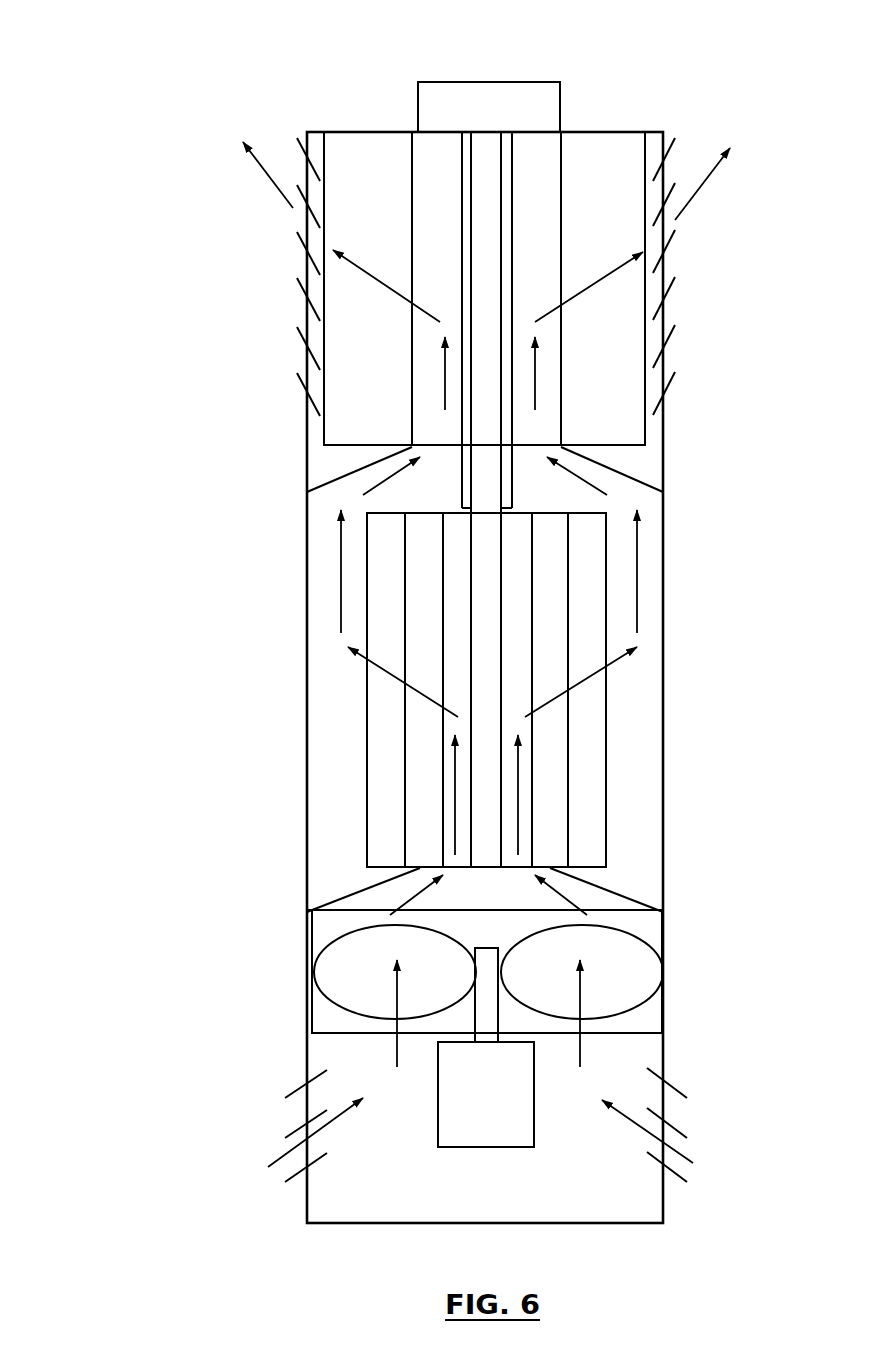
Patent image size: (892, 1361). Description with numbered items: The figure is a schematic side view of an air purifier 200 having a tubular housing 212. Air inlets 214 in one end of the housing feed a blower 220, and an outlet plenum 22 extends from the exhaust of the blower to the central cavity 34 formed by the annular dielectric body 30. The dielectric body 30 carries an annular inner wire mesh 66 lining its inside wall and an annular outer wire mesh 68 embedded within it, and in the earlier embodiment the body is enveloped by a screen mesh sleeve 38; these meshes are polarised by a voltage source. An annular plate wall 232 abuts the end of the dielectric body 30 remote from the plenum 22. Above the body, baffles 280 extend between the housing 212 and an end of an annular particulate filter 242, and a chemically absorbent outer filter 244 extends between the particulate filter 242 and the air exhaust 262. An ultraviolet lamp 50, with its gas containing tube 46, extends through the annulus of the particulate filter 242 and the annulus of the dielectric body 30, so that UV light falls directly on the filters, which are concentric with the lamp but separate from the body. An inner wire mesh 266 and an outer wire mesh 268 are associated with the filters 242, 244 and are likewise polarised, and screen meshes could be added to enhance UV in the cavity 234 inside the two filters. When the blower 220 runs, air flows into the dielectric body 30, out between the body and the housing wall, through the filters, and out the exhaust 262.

The air purifier 200 is at (197, 675).
The housing 212 is at (307, 607).
The air inlets 214 is at (290, 1110).
The air exhaust 262 is at (238, 222).
The chemically absorbent outer filter 244 is at (356, 150).
The annular particulate filter 242 is at (418, 148).
The cavity 234 is at (510, 172).
The ultraviolet lamp 50 is at (505, 82).
The gas containing tube 46 is at (501, 592).
The inner wire mesh 266 is at (513, 413).
The outer wire mesh 268 is at (562, 398).
The baffles 280 is at (337, 482).
The annular plate wall 232 is at (410, 514).
The annular dielectric body 30 is at (382, 767).
The central cavity 34 is at (471, 662).
The screen mesh sleeve 38 is at (570, 717).
The annular outer wire mesh 68 is at (605, 747).
The annular inner wire mesh 66 is at (532, 802).
The outlet plenum 22 is at (385, 890).
The blower 220 is at (633, 968).